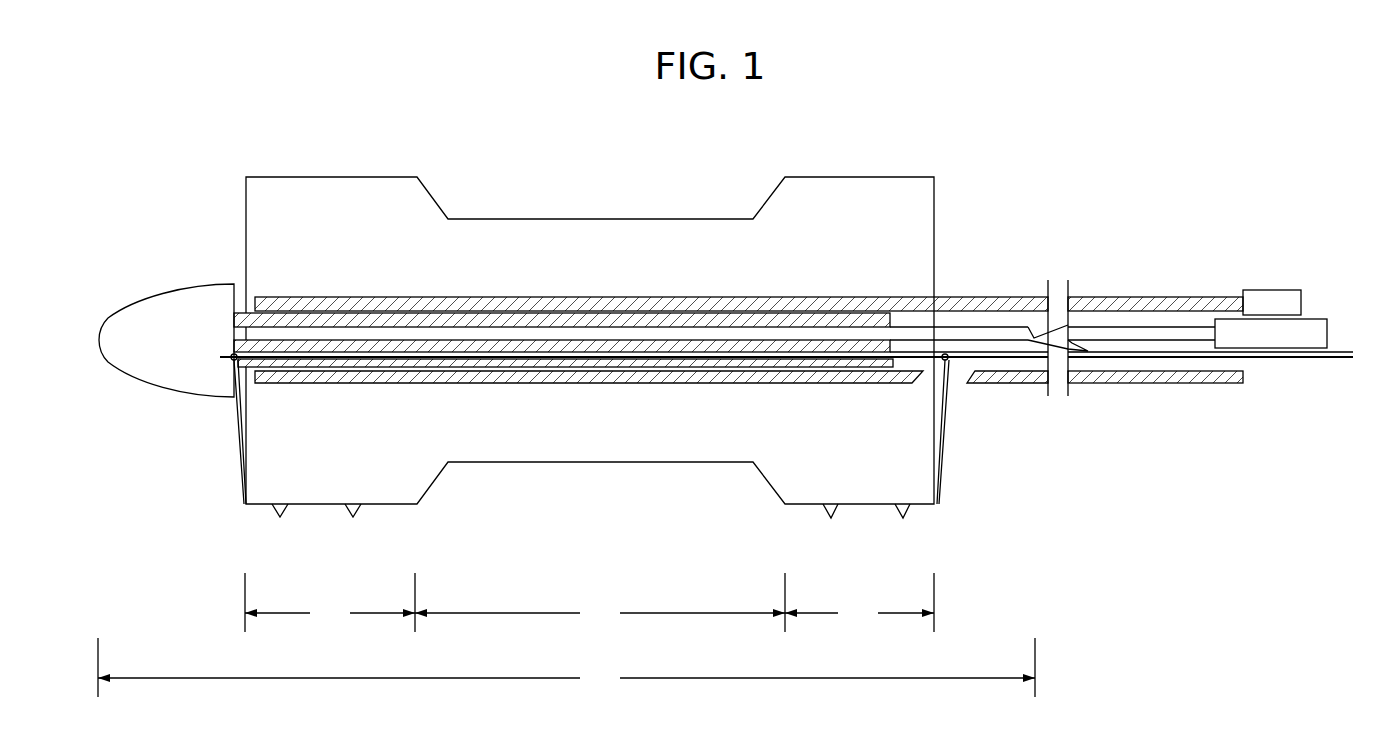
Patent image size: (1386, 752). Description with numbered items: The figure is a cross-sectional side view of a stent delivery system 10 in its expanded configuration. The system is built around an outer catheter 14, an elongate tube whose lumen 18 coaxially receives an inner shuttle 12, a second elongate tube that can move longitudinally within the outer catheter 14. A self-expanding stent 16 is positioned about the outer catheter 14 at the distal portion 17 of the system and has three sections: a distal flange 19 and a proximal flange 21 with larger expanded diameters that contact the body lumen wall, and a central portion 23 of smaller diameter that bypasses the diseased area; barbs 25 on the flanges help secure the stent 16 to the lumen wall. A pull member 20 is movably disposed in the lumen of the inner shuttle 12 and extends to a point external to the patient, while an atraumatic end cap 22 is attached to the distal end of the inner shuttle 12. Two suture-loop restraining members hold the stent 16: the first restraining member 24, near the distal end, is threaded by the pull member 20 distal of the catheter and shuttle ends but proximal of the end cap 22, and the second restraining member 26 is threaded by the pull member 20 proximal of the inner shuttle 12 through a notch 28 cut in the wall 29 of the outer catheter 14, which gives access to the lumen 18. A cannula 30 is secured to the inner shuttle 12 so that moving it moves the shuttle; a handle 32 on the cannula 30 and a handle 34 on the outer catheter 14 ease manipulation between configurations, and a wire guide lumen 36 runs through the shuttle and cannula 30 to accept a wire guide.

The stent delivery system 10 is at (902, 116).
The inner shuttle 12 is at (665, 367).
The outer catheter 14 is at (603, 297).
The stent 16 is at (331, 177).
The distal portion 17 is at (566, 667).
The lumen 18 is at (980, 315).
The distal flange 19 is at (330, 602).
The pull member 20 is at (1122, 360).
The proximal flange 21 is at (859, 602).
The end cap 22 is at (148, 300).
The central portion 23 is at (600, 602).
The first restraining member 24 is at (237, 418).
The barbs 25 is at (345, 545).
The second restraining member 26 is at (943, 420).
The notch 28 is at (960, 384).
The wall 29 is at (897, 385).
The cannula 30 is at (1137, 325).
The handle 32 is at (1313, 319).
The handle 34 is at (1272, 290).
The wire guide lumen 36 is at (291, 330).